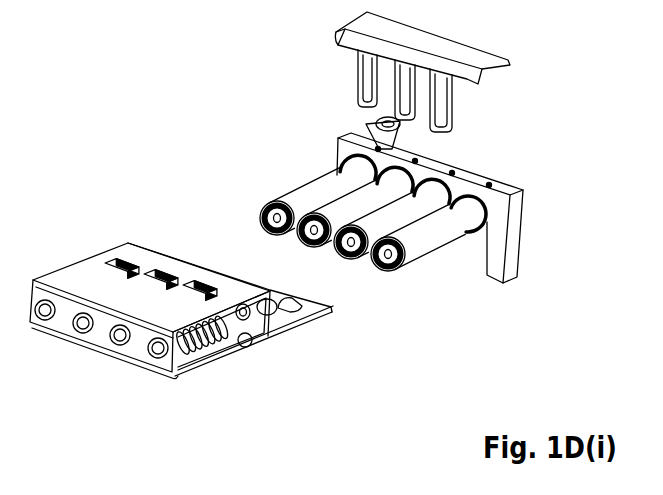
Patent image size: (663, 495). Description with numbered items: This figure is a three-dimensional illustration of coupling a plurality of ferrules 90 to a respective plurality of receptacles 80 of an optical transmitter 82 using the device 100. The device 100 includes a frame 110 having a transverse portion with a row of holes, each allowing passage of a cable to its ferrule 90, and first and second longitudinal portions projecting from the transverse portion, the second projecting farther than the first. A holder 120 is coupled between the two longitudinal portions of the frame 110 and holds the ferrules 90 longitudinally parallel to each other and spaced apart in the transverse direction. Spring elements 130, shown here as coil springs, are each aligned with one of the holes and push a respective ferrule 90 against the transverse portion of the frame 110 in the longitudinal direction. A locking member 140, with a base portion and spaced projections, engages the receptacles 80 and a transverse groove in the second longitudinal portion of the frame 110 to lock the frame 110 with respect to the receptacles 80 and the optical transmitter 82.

The device 100 is at (179, 283).
The frame 110 is at (85, 280).
The holder 120 is at (237, 310).
The spring elements 130 is at (193, 355).
The ferrules 90 is at (265, 312).
The locking member 140 is at (372, 22).
The receptacles 80 is at (377, 198).
The optical transmitter 82 is at (518, 232).